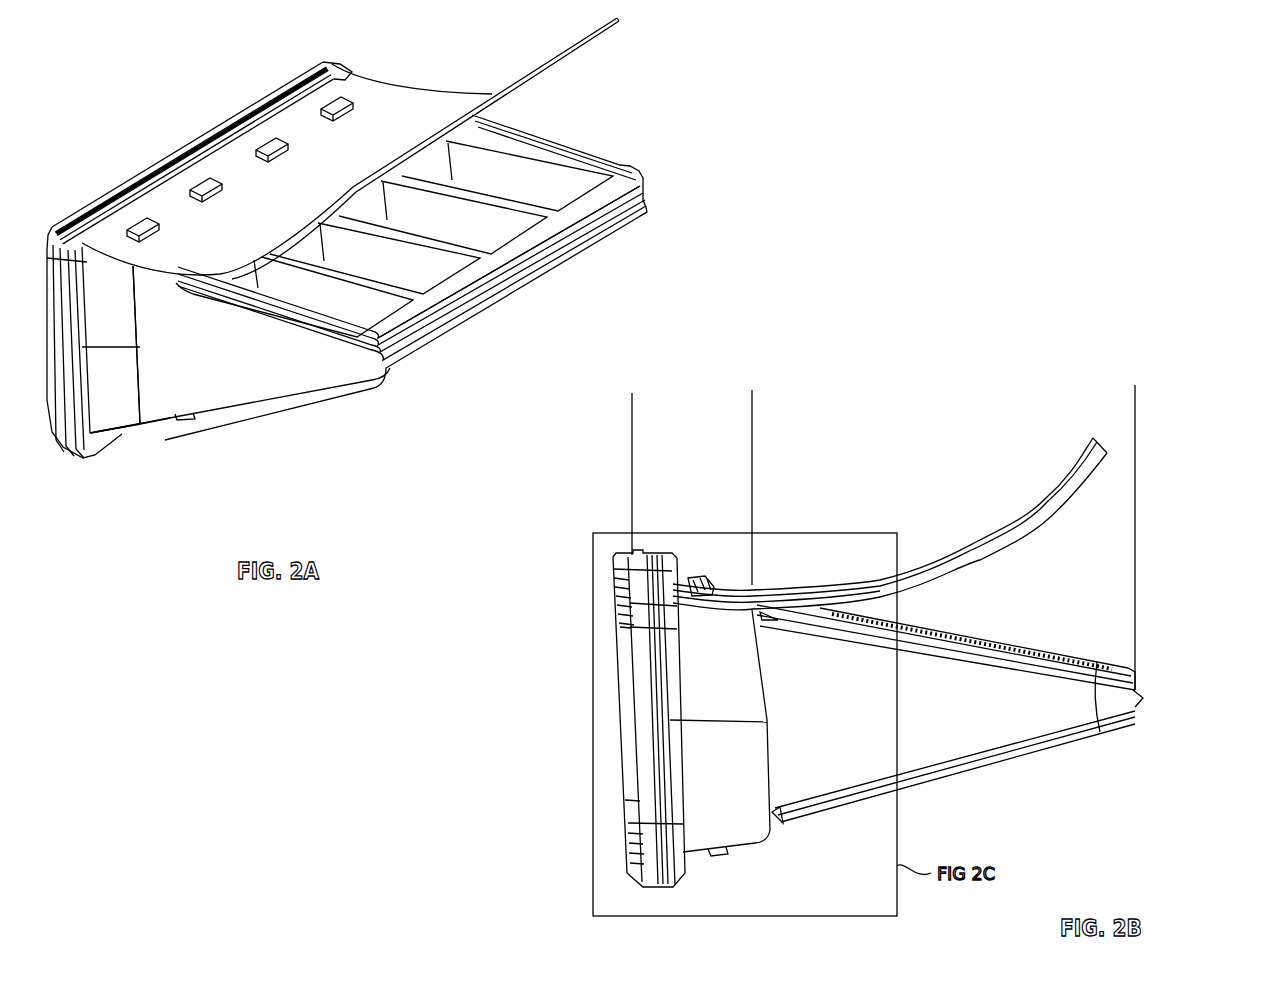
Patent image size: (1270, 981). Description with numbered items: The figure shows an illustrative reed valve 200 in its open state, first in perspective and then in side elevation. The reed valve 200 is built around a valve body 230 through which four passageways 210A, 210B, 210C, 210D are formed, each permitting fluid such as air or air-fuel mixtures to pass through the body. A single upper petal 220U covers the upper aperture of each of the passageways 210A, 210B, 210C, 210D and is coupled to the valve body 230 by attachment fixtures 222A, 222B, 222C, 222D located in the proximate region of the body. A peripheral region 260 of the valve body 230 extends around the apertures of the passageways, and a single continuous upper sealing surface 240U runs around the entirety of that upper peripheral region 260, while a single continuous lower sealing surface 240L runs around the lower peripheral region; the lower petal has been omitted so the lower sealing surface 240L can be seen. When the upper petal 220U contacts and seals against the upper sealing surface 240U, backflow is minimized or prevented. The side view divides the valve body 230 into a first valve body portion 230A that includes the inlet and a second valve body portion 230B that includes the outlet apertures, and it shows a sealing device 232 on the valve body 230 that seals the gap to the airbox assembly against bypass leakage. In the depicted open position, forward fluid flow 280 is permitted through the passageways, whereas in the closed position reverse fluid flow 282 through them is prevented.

In FIG. 2A, the reed valve 200 is at (1103, 70).
In FIG. 2A, the passageway 210A is at (294, 297).
In FIG. 2A, the passageway 210B is at (375, 258).
In FIG. 2A, the passageway 210C is at (443, 217).
In FIG. 2A, the passageway 210D is at (507, 176).
In FIG. 2A, the upper petal 220U is at (622, 18).
In FIG. 2B, the upper petal 220U is at (980, 528).
In FIG. 2A, the attachment fixture 222A is at (158, 228).
In FIG. 2A, the attachment fixture 222B is at (222, 188).
In FIG. 2A, the attachment fixture 222C is at (288, 148).
In FIG. 2A, the attachment fixture 222D is at (351, 102).
In FIG. 2A, the valve body 230 is at (130, 413).
In FIG. 2B, the valve body 230 is at (657, 555).
In FIG. 2B, the first valve body portion 230A is at (752, 436).
In FIG. 2B, the second valve body portion 230B is at (1135, 421).
In FIG. 2A, the sealing device 232 is at (64, 232).
In FIG. 2B, the sealing device 232 is at (613, 555).
In FIG. 2A, the upper sealing surface 240U is at (632, 165).
In FIG. 2B, the upper sealing surface 240U is at (1118, 663).
In FIG. 2A, the lower sealing surface 240L is at (323, 395).
In FIG. 2B, the lower sealing surface 240L is at (1038, 751).
In FIG. 2A, the peripheral region 260 is at (517, 280).
In FIG. 2B, the forward fluid flow 280 is at (580, 694).
In FIG. 2B, the reverse fluid flow 282 is at (1208, 486).